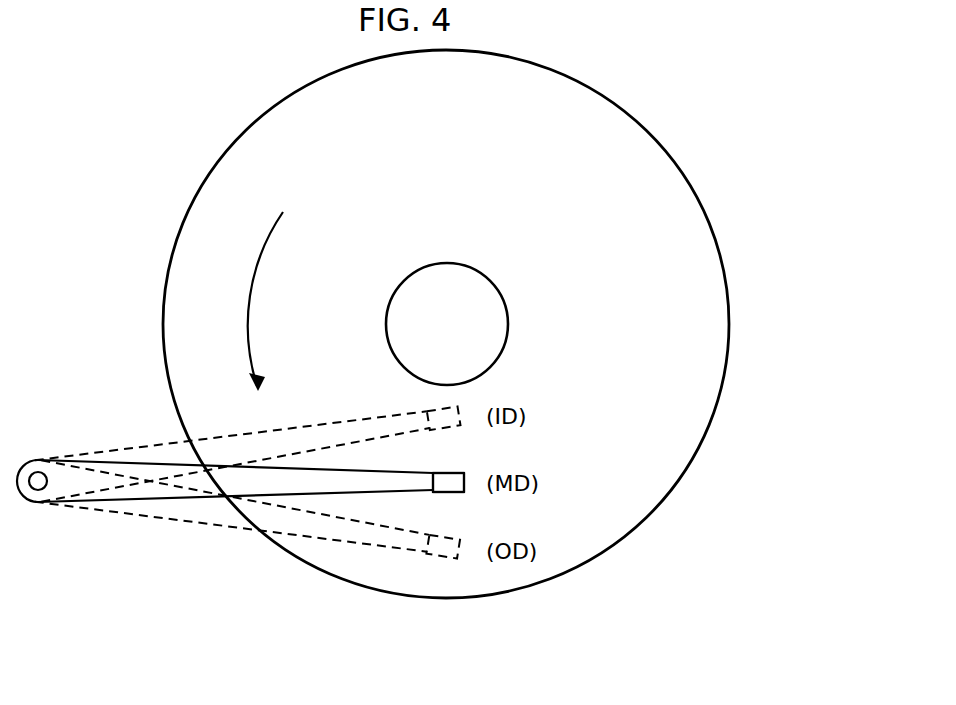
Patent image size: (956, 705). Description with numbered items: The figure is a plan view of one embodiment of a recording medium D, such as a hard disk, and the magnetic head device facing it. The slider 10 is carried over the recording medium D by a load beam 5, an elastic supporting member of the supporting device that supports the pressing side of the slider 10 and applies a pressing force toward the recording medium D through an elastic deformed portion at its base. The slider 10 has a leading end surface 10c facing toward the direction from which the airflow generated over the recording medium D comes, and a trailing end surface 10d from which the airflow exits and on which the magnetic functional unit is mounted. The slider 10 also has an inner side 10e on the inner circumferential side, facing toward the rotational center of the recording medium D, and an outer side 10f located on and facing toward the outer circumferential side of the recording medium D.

The recording medium D is at (713, 325).
The load beam 5 is at (287, 485).
The slider 10 is at (460, 497).
The leading end surface 10c is at (433, 481).
The trailing end surface 10d is at (464, 482).
The inner side 10e is at (448, 472).
The outer side 10f is at (455, 493).